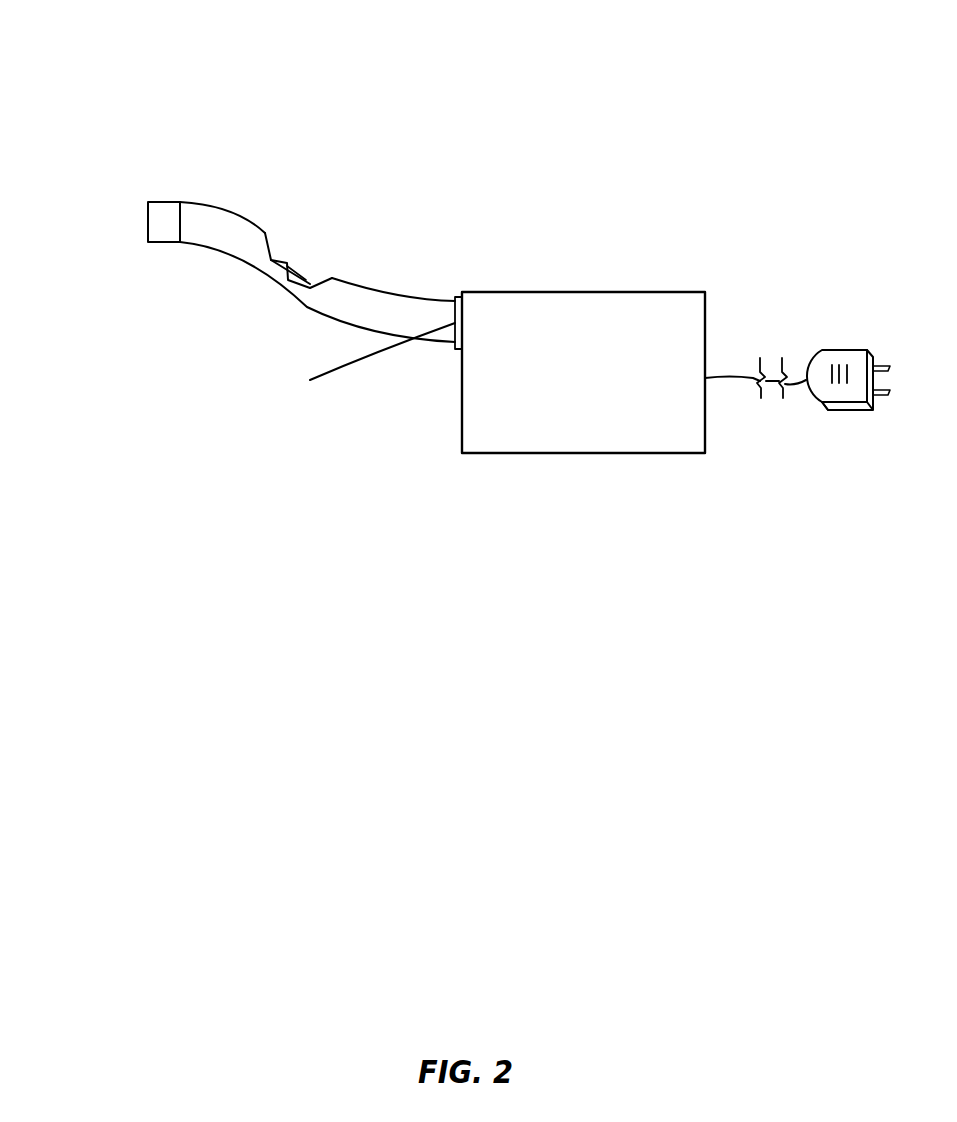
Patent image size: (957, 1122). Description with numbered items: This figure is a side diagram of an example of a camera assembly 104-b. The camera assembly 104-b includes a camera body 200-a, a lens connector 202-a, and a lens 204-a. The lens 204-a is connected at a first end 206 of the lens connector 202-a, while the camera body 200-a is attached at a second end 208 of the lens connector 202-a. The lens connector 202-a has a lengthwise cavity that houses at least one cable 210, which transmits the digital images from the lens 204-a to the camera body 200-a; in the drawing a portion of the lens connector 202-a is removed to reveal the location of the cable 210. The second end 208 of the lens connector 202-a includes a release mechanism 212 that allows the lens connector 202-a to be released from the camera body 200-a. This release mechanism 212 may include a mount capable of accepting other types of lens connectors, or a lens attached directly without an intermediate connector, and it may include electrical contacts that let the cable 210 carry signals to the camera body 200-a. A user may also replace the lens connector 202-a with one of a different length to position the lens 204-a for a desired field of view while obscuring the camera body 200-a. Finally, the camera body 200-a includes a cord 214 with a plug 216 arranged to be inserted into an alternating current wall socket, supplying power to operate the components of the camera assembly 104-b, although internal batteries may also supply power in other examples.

The camera assembly 104-b is at (256, 90).
The first end 206 is at (102, 155).
The lens 204-a is at (163, 218).
The lens connector 202-a is at (362, 308).
The cable 210 is at (293, 272).
The second end 208 is at (442, 255).
The release mechanism 212 is at (363, 358).
The camera body 200-a is at (640, 318).
The cord 214 is at (746, 374).
The plug 216 is at (857, 357).